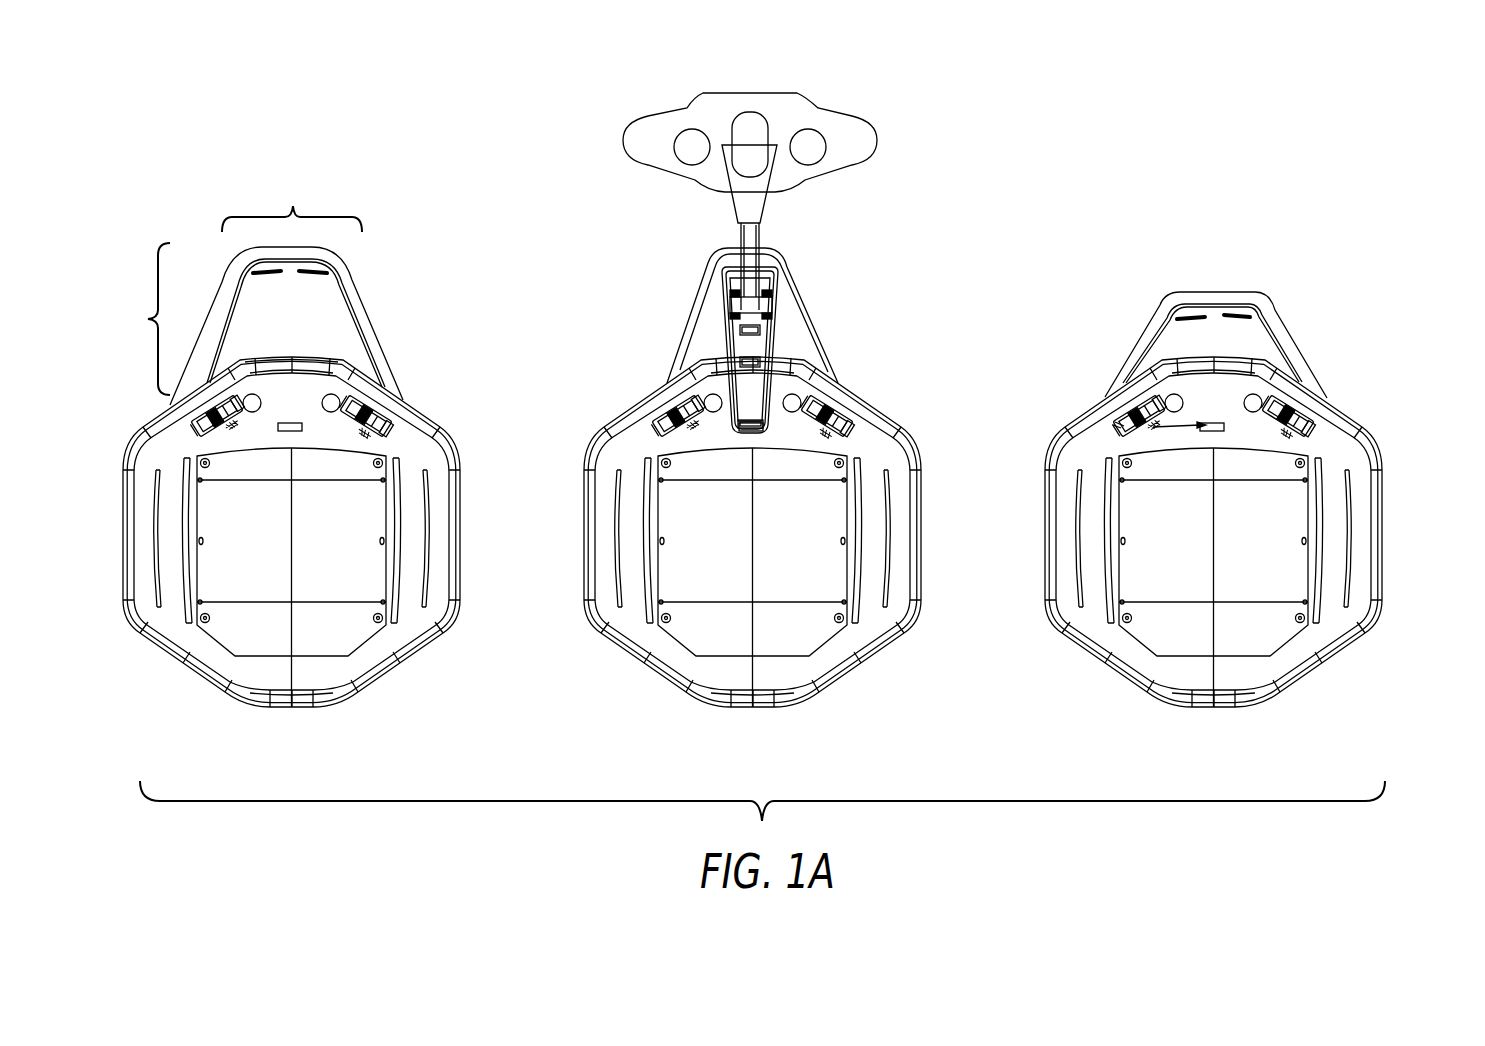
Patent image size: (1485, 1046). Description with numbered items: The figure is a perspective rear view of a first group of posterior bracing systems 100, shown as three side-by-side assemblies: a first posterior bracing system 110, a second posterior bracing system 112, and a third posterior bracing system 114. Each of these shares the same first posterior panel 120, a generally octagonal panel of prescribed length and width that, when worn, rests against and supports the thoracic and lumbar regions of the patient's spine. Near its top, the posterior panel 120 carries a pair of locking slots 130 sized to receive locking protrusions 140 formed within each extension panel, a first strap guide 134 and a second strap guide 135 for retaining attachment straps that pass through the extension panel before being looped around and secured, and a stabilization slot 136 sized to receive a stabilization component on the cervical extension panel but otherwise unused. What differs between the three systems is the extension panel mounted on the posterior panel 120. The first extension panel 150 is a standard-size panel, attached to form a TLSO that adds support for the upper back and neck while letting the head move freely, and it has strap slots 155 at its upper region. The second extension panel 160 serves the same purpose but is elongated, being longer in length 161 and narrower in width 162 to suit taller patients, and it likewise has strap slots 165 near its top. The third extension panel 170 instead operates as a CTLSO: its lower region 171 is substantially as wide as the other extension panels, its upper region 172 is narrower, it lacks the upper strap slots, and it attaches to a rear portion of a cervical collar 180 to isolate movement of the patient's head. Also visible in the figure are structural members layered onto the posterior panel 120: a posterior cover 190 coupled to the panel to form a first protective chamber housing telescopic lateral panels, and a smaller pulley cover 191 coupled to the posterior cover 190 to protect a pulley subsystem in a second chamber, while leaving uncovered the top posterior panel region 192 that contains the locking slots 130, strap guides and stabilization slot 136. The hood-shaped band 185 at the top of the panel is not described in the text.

The posterior bracing systems 100 is at (175, 218).
The first posterior bracing system 110 is at (1245, 752).
The second posterior bracing system 112 is at (315, 745).
The third posterior bracing system 114 is at (780, 748).
The first posterior panel 120 is at (400, 440).
The locking slots 130 is at (1285, 400).
The first strap guide 134 is at (1143, 398).
The second strap guide 135 is at (1260, 395).
The stabilization slot 136 is at (1120, 422).
The locking protrusions 140 is at (1172, 396).
The first extension panel 150 is at (1194, 290).
The strap slots 155 is at (1247, 311).
The second extension panel 160 is at (343, 258).
The length 161 is at (140, 319).
The width 162 is at (292, 204).
The strap slots 165 is at (283, 273).
The third extension panel 170 is at (785, 260).
The lower region 171 is at (686, 354).
The upper region 172 is at (700, 238).
The cervical collar 180 is at (858, 74).
The housing top band 185 is at (330, 358).
The posterior cover 190 is at (330, 632).
The pulley cover 191 is at (353, 567).
The top posterior panel region 192 is at (484, 463).